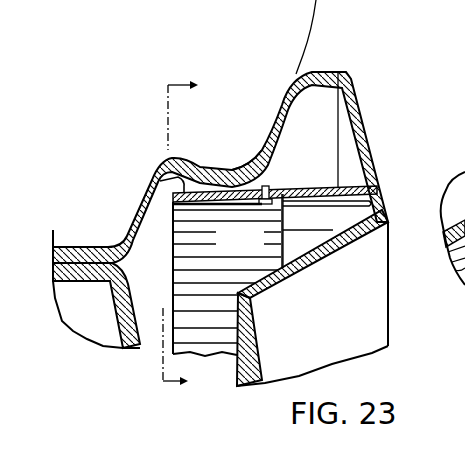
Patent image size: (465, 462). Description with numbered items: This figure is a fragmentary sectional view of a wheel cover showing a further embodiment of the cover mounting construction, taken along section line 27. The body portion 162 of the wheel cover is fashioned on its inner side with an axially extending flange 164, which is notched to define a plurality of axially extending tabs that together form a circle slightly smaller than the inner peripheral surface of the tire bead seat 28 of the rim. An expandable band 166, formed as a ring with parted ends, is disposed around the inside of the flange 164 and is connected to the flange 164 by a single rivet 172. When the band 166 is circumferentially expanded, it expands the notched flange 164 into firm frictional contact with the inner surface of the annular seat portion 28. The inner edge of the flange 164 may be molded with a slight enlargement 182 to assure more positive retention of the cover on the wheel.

The section line 27- 27 is at (197, 245).
The annular portion 28 is at (244, 163).
The body portion 162 is at (382, 173).
The axially extending flange 164 is at (320, 185).
The expandable band 166 is at (170, 328).
The rivet 172 is at (267, 205).
The enlargement 182 is at (152, 177).